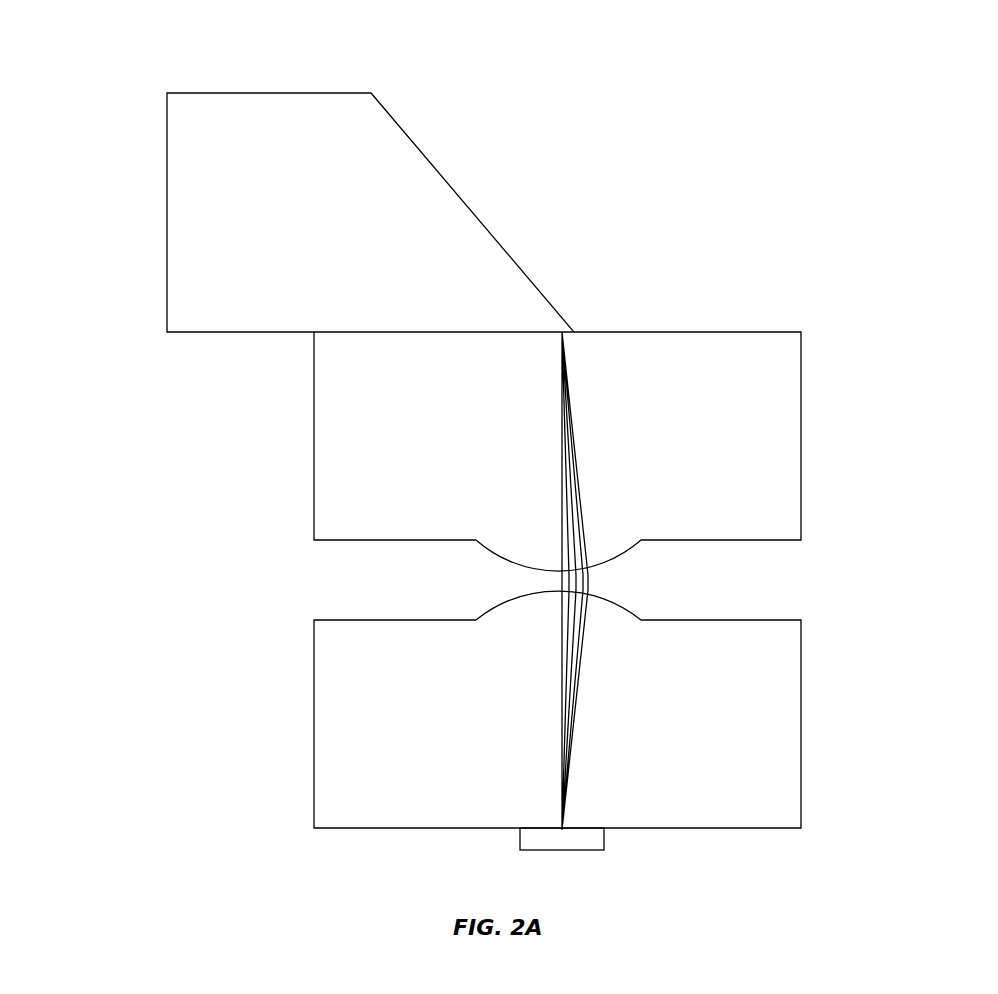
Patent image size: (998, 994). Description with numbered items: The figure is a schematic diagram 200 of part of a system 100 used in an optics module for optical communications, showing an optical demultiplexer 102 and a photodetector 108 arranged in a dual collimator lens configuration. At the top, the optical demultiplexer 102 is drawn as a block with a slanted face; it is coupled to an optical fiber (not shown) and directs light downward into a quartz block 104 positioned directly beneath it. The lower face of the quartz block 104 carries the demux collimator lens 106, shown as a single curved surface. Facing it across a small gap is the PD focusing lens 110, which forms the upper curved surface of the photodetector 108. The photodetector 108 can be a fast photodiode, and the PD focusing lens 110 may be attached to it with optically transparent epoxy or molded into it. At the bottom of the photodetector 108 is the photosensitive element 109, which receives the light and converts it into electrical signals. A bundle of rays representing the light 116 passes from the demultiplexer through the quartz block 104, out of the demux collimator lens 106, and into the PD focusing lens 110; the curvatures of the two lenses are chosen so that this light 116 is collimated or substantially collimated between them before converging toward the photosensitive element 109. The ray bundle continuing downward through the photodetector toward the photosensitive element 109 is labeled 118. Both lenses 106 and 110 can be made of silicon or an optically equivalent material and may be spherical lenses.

The system 100 is at (712, 190).
The optical demultiplexer 102 is at (197, 143).
The quartz block 104 is at (313, 440).
The demux collimator lens 106 is at (478, 551).
The photodetector 108 is at (300, 704).
The photosensitive element 109 is at (518, 823).
The PD focusing lens 110 is at (640, 604).
The light 116 is at (593, 576).
The light rays 118 is at (583, 677).
The schematic diagram 200 is at (995, 36).